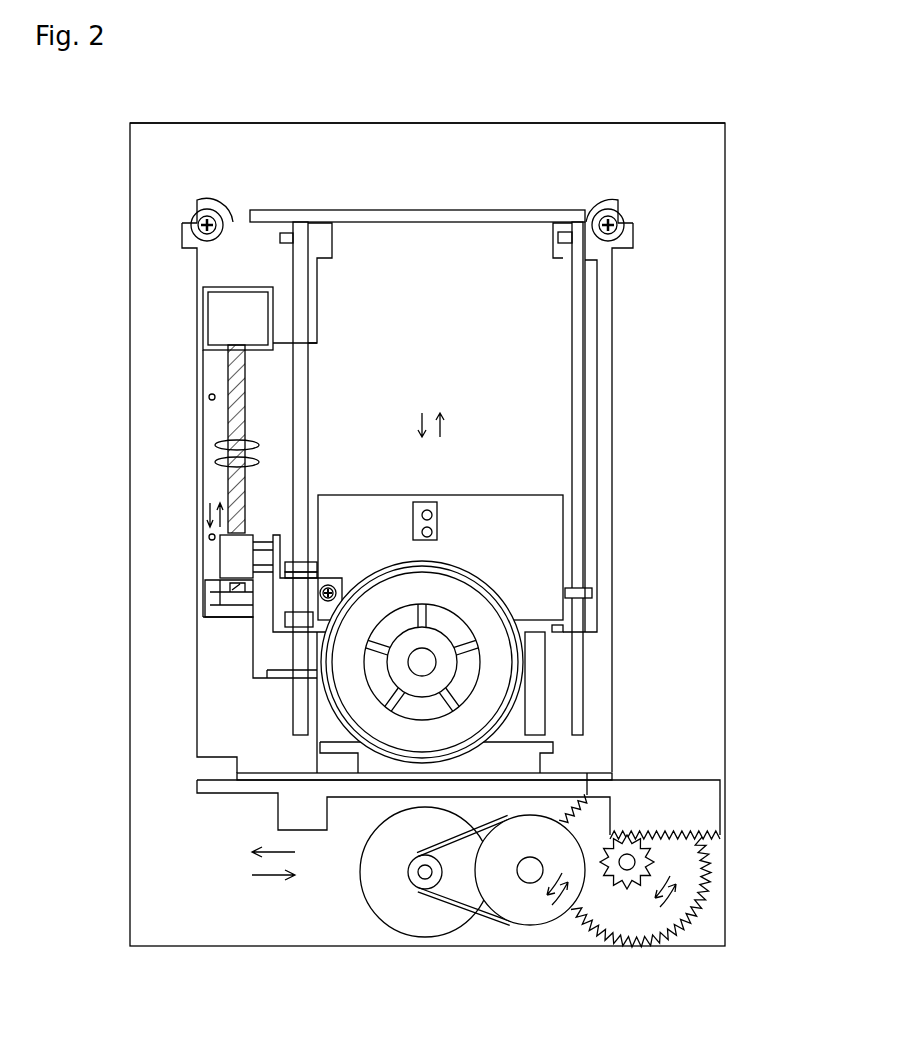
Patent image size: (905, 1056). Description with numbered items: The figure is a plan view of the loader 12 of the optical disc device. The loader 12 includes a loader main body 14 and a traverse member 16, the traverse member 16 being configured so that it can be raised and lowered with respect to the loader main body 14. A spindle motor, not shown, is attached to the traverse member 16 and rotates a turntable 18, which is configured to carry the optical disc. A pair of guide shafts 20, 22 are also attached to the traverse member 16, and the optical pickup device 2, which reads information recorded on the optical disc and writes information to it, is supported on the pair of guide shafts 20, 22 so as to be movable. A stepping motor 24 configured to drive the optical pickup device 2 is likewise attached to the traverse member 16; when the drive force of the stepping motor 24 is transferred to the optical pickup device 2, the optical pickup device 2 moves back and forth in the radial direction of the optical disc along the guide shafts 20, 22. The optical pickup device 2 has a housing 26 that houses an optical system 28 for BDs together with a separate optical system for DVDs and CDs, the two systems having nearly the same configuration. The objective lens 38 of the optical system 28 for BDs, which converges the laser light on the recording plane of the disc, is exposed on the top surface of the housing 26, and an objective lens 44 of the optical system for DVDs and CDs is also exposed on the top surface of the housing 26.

The optical pickup device 2 is at (505, 492).
The loader 12 is at (620, 113).
The loader main body 14 is at (715, 193).
The traverse member 16 is at (542, 183).
The turntable 18 is at (482, 720).
The guide shaft 20 is at (297, 655).
The guide shaft 22 is at (578, 660).
The stepping motor 24 is at (222, 325).
The housing 26 is at (520, 507).
The optical system for BDs 28 is at (388, 515).
The objective lens 38 is at (427, 515).
The objective lens 44 is at (432, 532).